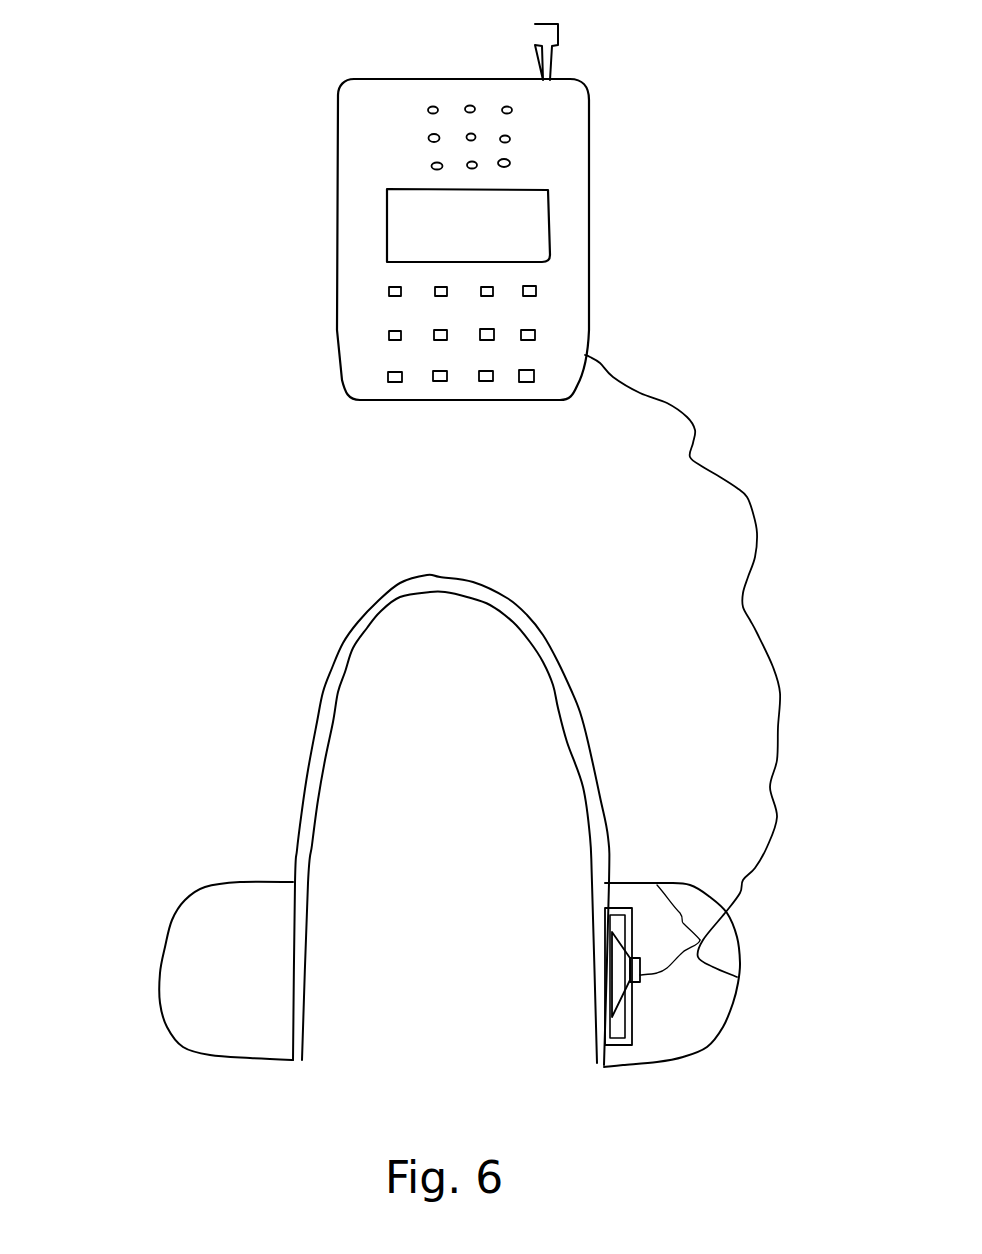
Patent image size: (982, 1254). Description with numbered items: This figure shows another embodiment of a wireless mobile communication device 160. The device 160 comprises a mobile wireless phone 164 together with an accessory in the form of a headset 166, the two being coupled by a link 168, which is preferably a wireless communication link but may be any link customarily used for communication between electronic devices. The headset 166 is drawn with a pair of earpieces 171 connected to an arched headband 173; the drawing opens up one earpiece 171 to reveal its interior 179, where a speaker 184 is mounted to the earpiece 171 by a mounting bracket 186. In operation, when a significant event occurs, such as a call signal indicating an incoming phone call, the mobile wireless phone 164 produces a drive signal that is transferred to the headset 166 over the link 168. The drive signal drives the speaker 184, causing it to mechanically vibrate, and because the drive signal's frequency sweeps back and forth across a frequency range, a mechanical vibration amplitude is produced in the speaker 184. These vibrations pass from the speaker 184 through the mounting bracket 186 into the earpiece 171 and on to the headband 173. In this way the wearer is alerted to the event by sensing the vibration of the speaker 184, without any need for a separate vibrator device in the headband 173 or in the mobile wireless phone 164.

The wireless mobile communication device 160 is at (172, 111).
The mobile wireless phone 164 is at (590, 158).
The headset 166 is at (335, 621).
The link 168 is at (745, 493).
The earpiece 171 is at (158, 975).
The headband 173 is at (558, 665).
The interior of the earpiece 179 is at (727, 1003).
The speaker 184 is at (640, 990).
The mounting bracket 186 is at (631, 1032).